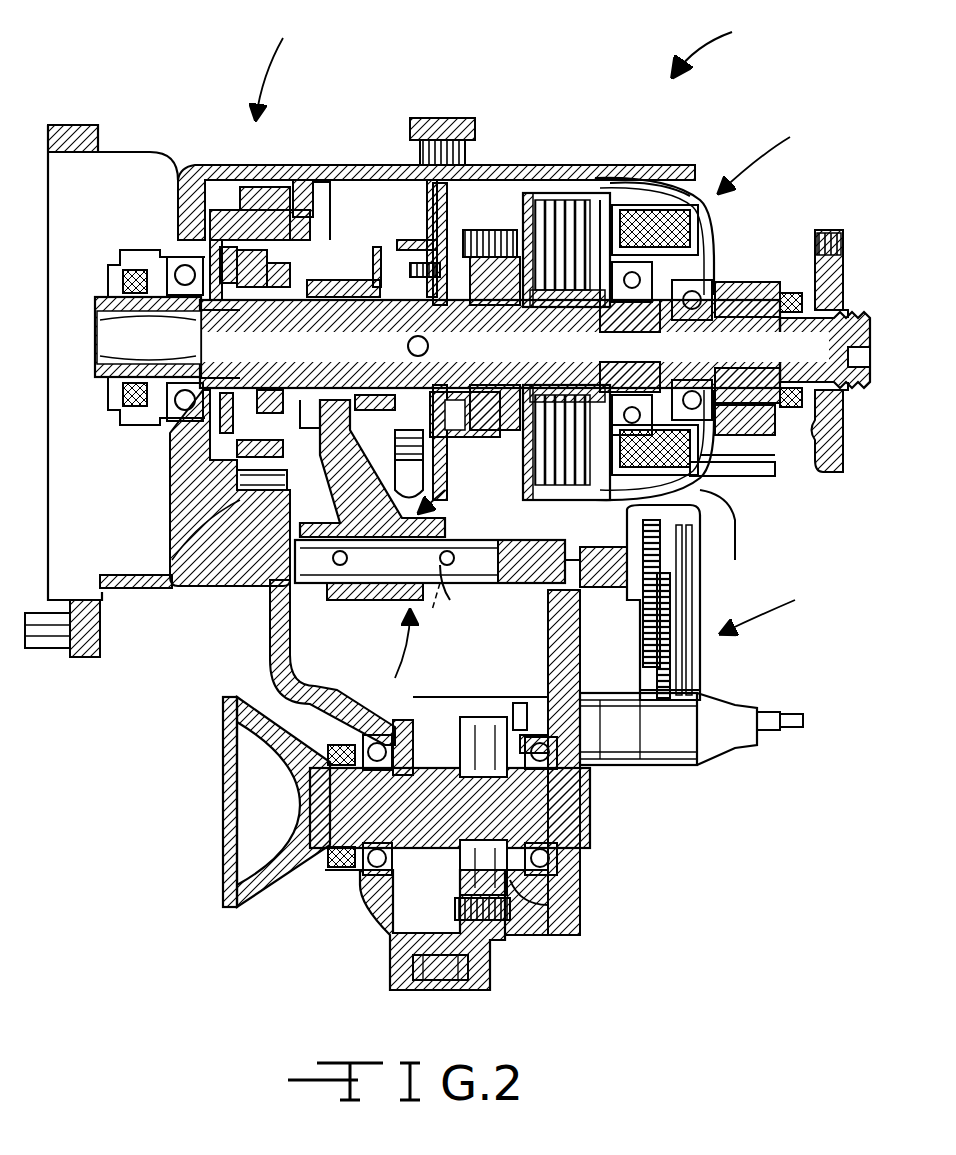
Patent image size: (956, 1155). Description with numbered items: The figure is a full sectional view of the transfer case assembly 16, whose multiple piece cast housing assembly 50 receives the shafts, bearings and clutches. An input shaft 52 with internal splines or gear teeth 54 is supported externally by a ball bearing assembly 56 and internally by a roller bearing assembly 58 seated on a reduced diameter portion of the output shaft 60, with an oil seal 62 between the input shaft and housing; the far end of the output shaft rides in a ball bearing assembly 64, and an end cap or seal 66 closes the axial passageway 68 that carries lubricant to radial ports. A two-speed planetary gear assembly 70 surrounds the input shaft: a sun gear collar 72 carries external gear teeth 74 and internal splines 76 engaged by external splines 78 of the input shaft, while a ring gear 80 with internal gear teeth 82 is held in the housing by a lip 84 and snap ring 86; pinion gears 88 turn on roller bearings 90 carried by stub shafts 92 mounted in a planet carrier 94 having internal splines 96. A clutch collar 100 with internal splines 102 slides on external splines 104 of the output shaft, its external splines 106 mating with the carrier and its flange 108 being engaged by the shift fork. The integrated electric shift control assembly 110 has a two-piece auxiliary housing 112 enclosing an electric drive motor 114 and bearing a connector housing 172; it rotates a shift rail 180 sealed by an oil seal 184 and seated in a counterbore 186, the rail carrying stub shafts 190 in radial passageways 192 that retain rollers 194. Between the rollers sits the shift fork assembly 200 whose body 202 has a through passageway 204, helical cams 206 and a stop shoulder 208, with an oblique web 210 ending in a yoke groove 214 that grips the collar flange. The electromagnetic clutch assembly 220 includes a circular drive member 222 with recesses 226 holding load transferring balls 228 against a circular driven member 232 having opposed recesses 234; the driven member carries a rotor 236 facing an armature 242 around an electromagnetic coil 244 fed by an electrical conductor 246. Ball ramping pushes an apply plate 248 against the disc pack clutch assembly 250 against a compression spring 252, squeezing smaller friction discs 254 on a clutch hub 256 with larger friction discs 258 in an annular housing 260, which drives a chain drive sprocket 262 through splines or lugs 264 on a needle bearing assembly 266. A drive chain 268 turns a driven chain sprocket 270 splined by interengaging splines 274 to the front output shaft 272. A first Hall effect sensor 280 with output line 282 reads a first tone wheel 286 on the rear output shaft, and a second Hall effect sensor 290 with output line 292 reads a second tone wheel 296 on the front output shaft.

The transfer case assembly 16 is at (726, 43).
The housing assembly 50 is at (92, 124).
The input shaft 52 is at (106, 298).
The internal splines or gear teeth 54 is at (95, 318).
The ball bearing assembly 56 is at (178, 270).
The roller bearing assembly 58 is at (148, 338).
The output shaft 60 is at (850, 390).
The oil seal 62 is at (120, 393).
The ball bearing assembly 64 is at (712, 292).
The end cap or seal 66 is at (110, 362).
The axial passageway 68 is at (570, 360).
The planetary gear assembly 70 is at (279, 61).
The sun gear collar 72 is at (180, 447).
The external gear teeth 74 is at (190, 478).
The internal splines or gear teeth 76 is at (178, 415).
The external splines or gear teeth 78 is at (266, 300).
The ring gear 80 is at (175, 525).
The internal gear teeth 82 is at (235, 487).
The projection or lip 84 is at (245, 190).
The snap ring 86 is at (292, 188).
The pinion gears 88 is at (302, 170).
The roller bearings 90 is at (176, 188).
The stub shafts 92 is at (218, 228).
The planet carrier 94 is at (314, 210).
The internal splines or gear teeth 96 is at (374, 280).
The clutch collar 100 is at (535, 344).
The internal splines or gear teeth 102 is at (330, 300).
The external splines or gear teeth 104 is at (260, 344).
The external splines or gear teeth 106 is at (340, 280).
The flange 108 is at (392, 210).
The integrated electric shift control assembly 110 is at (604, 604).
The auxiliary housing 112 is at (715, 648).
The electric drive motor 114 is at (640, 768).
The connector housing 172 is at (720, 750).
The shift rail 180 is at (478, 560).
The oil seal 184 is at (600, 590).
The counterbore 186 is at (290, 580).
The stub shafts 190 is at (450, 570).
The radial passageways 192 is at (436, 598).
The rollers 194 is at (455, 550).
The shift fork assembly 200 is at (394, 468).
The body 202 is at (365, 595).
The through passageway 204 is at (410, 610).
The helical cam 206 is at (300, 590).
The face or shoulder 208 is at (340, 540).
The web 210 is at (335, 480).
The semi-circular channel or groove 214 is at (378, 410).
The electromagnetic clutch assembly 220 is at (712, 305).
The circular drive member 222 is at (660, 190).
The recesses 226 is at (712, 385).
The load transferring balls 228 is at (700, 203).
The circular driven member 232 is at (696, 230).
The recesses 234 is at (755, 318).
The rotor 236 is at (735, 500).
The armature 242 is at (630, 262).
The electromagnetic coil 244 is at (735, 478).
The electrical conductor 246 is at (772, 470).
The apply plate 248 is at (612, 265).
The disc pack clutch assembly 250 is at (560, 192).
The compression spring 252 is at (629, 346).
The friction discs 254 is at (520, 230).
The clutch hub 256 is at (494, 305).
The friction discs 258 is at (600, 195).
The annular housing 260 is at (476, 162).
The chain drive sprocket 262 is at (460, 392).
The interengaging splines or lugs and recesses 264 is at (425, 452).
The needle bearing assembly 266 is at (454, 346).
The drive chain 268 is at (460, 245).
The driven chain sprocket 270 is at (568, 905).
The front output shaft 272 is at (565, 830).
The interengaging splines 274 is at (457, 818).
The first Hall effect sensor 280 is at (848, 352).
The output line 282 is at (735, 430).
The first tone wheel 286 is at (790, 292).
The second Hall effect sensor 290 is at (510, 712).
The output line 292 is at (518, 703).
The second tone wheel 296 is at (575, 795).